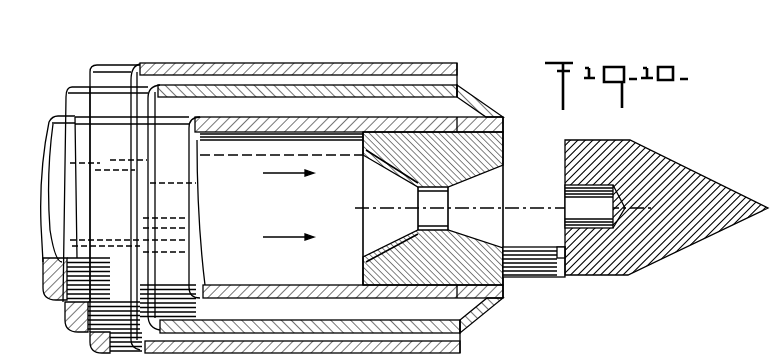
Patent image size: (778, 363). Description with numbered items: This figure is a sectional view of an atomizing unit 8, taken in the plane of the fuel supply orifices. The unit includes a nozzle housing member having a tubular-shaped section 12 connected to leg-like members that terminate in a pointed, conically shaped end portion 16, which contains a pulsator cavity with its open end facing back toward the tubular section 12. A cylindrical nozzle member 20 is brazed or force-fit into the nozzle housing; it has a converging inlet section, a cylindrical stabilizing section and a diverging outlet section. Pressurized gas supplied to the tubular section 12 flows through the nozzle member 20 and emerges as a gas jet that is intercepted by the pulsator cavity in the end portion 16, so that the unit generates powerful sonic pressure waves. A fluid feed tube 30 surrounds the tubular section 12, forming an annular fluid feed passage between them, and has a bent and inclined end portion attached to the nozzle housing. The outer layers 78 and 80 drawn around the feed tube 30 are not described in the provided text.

The outer hose jacket 78 is at (319, 64).
The fluid feed tube 30 is at (397, 88).
The angled end portion of jacket 80 is at (458, 80).
The atomizing unit 8 is at (481, 319).
The tubular-shaped section 12 is at (221, 113).
The cylindrical nozzle member 20 is at (352, 136).
The pointed, conically shaped end portion 16 is at (693, 175).